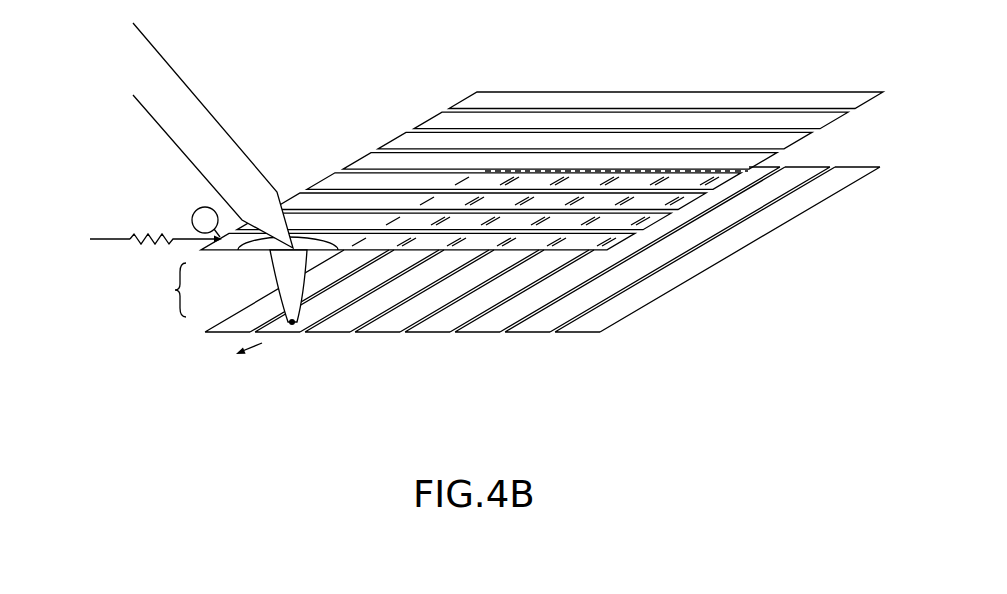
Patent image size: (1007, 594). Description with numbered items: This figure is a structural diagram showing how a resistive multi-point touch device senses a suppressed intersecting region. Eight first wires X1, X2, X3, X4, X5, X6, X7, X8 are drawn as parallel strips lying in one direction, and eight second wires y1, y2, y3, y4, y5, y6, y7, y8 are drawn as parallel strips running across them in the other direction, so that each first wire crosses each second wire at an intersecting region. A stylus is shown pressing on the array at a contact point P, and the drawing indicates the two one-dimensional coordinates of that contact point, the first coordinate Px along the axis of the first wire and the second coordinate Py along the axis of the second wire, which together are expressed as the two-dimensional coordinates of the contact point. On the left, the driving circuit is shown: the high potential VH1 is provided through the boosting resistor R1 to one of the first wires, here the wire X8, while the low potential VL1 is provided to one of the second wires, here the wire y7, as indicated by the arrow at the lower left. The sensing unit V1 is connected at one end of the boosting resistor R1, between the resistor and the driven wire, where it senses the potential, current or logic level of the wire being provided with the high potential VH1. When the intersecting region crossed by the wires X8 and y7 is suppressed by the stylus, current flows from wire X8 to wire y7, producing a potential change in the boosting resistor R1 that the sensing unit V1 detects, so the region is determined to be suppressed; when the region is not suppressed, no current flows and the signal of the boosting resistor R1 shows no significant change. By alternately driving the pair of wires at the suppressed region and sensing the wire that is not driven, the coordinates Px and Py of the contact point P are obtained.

The first wire X1 is at (666, 100).
The first wire X2 is at (631, 120).
The first wire X3 is at (595, 140).
The first wire X4 is at (560, 161).
The first wire X5 is at (524, 181).
The first wire X6 is at (489, 201).
The first wire X7 is at (454, 221).
The first wire X8 is at (418, 241).
The second wire y1 is at (717, 249).
The second wire y2 is at (667, 249).
The second wire y3 is at (617, 249).
The second wire y4 is at (497, 291).
The second wire y5 is at (447, 291).
The second wire y6 is at (397, 291).
The second wire y7 is at (347, 291).
The second wire y8 is at (297, 291).
The high potential VH1 is at (110, 253).
The boosting resistor R1 is at (176, 250).
The sensing unit V1 is at (206, 222).
The contact point P is at (167, 290).
The first 1-D coordinate Px is at (262, 233).
The second 1-D coordinate Py is at (252, 324).
The low potential VL1 is at (234, 365).